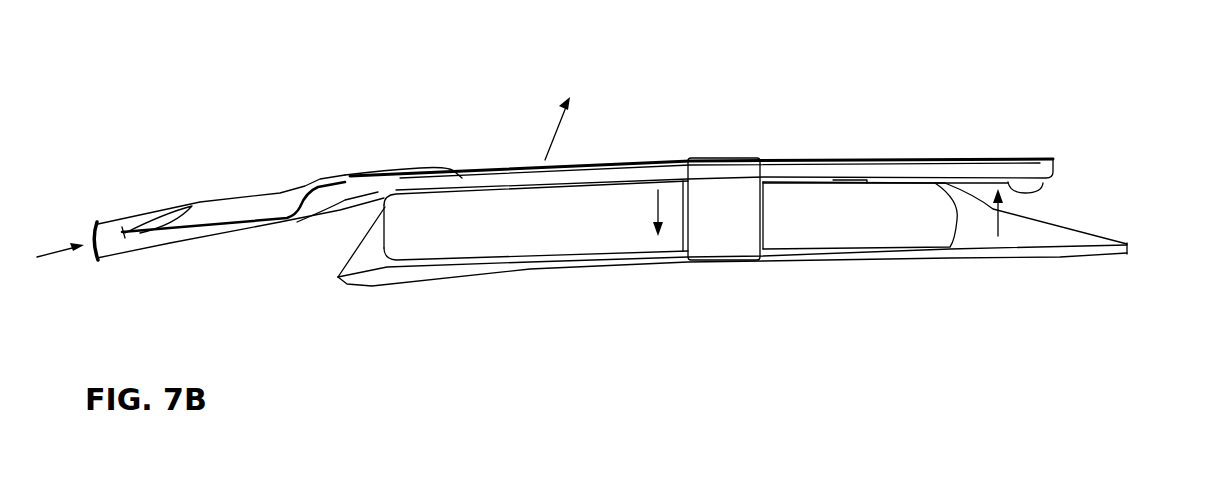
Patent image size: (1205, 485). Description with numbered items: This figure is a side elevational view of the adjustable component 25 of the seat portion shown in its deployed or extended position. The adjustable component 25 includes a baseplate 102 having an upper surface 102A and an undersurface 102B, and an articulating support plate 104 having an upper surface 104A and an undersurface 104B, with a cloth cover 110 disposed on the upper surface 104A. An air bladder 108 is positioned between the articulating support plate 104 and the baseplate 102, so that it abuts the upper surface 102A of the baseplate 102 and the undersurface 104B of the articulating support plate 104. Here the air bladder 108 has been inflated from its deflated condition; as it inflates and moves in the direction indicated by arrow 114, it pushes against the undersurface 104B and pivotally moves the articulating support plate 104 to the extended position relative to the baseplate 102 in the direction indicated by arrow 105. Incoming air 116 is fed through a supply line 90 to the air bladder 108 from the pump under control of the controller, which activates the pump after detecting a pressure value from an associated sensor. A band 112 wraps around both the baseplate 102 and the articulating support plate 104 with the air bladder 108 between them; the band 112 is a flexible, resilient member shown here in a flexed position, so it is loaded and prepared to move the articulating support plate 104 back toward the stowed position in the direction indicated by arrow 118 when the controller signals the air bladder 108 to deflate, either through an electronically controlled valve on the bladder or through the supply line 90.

The adjustable component 25 is at (650, 88).
The supply line 90 is at (111, 230).
The incoming air 116 is at (52, 247).
The arrow 105 is at (547, 138).
The articulating support plate 104 is at (883, 176).
The upper surface 104A is at (803, 157).
The cloth cover 110 is at (990, 165).
The undersurface 104B is at (1043, 192).
The air bladder 108 is at (553, 217).
The arrow 118 is at (657, 205).
The band 112 is at (727, 227).
The baseplate 102 is at (1018, 254).
The upper surface 102A is at (1070, 237).
The undersurface 102B is at (1082, 250).
The arrow 114 is at (997, 210).